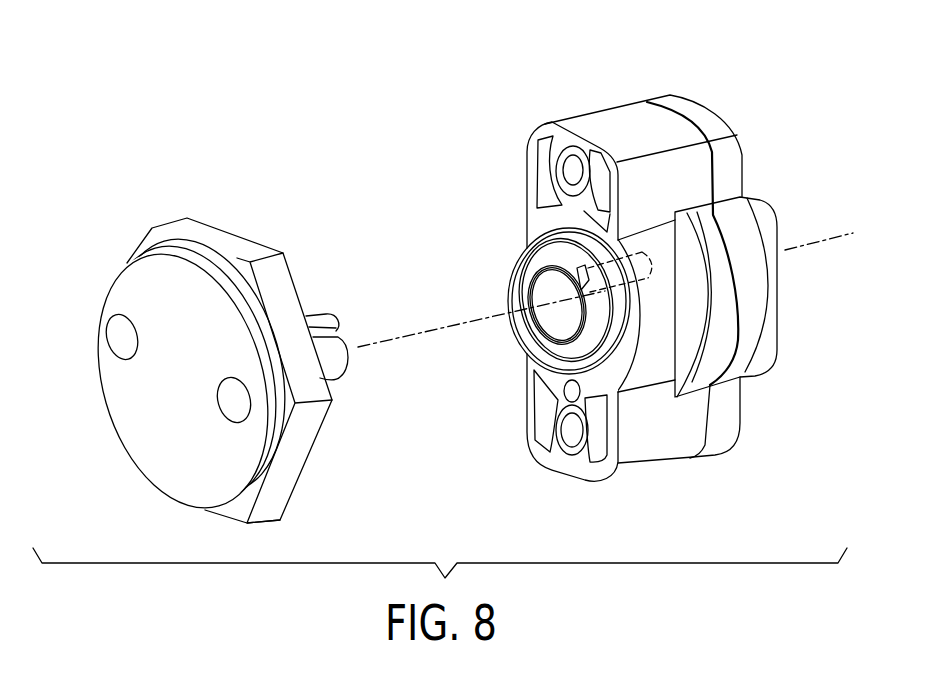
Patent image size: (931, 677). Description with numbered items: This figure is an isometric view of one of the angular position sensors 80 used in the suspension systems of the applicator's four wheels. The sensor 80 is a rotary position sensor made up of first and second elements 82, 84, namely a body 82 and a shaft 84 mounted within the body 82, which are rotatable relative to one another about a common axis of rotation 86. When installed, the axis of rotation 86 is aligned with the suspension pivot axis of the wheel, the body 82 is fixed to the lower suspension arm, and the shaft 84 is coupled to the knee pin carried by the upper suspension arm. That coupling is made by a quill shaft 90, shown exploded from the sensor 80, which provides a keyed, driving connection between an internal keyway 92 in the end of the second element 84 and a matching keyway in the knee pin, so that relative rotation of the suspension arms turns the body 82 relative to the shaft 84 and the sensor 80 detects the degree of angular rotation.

The angular position sensor 80 is at (622, 118).
The first element (body) 82 is at (533, 225).
The second element (shaft) 84 is at (530, 275).
The axis of rotation 86 is at (832, 238).
The quill shaft 90 is at (145, 285).
The internal keyway 92 is at (556, 317).